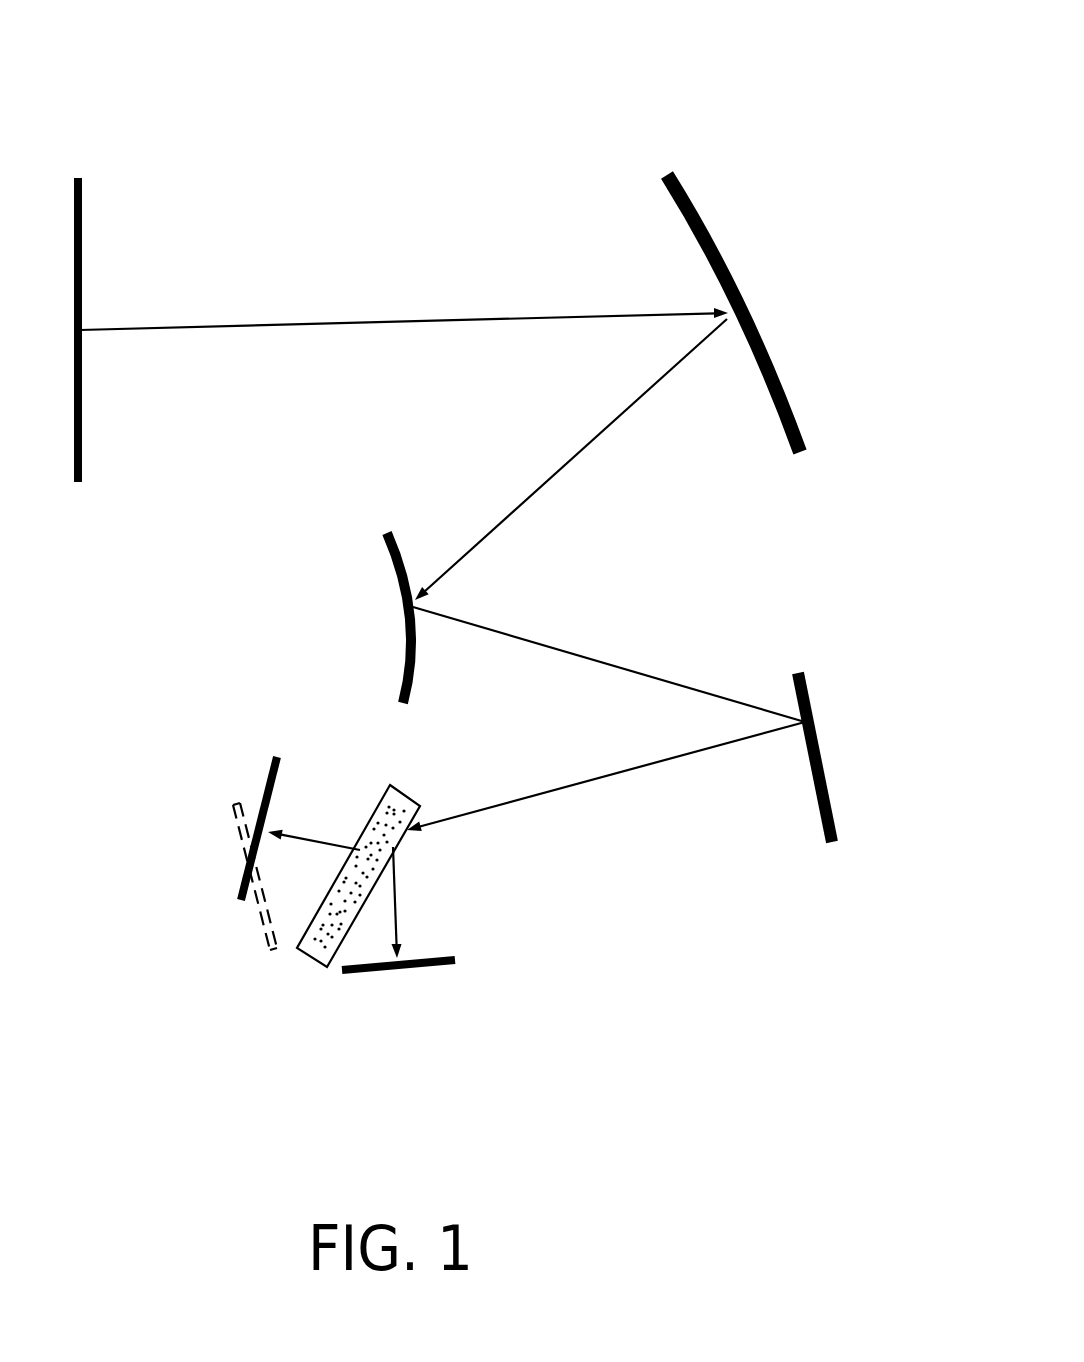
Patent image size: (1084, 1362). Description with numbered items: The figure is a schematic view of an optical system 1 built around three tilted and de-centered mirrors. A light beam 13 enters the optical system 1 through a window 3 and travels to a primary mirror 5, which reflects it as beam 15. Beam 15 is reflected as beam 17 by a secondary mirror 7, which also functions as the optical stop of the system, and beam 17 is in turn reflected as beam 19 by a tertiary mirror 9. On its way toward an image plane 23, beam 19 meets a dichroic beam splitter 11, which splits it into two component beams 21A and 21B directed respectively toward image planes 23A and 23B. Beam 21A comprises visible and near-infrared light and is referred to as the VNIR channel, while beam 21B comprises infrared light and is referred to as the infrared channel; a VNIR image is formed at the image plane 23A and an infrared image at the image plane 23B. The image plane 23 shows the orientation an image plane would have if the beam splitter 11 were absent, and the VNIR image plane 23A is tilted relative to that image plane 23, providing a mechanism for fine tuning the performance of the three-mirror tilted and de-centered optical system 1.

The optical system 1 is at (802, 75).
The window 3 is at (78, 176).
The primary mirror 5 is at (758, 320).
The secondary mirror 7 is at (385, 553).
The tertiary mirror 9 is at (832, 797).
The dichroic beam splitter 11 is at (300, 938).
The light beam 13 is at (322, 322).
The beam 15 is at (570, 458).
The beam 17 is at (618, 662).
The beam 19 is at (690, 755).
The component beam 21A is at (308, 837).
The component beam 21B is at (395, 898).
The image plane 23 is at (233, 823).
The image plane 23A is at (280, 768).
The image plane 23B is at (430, 965).